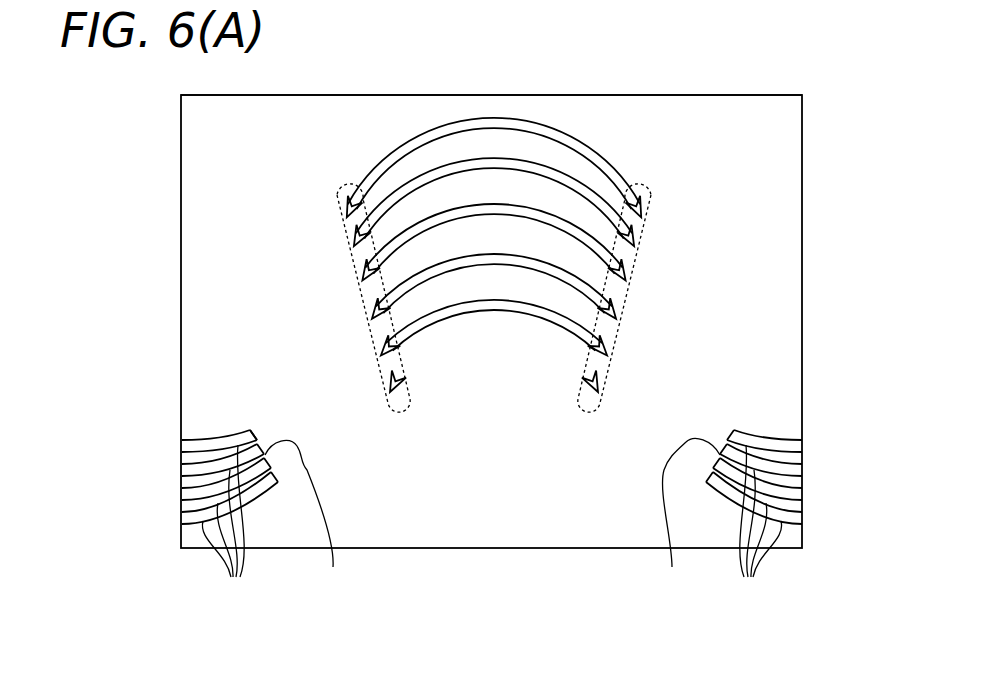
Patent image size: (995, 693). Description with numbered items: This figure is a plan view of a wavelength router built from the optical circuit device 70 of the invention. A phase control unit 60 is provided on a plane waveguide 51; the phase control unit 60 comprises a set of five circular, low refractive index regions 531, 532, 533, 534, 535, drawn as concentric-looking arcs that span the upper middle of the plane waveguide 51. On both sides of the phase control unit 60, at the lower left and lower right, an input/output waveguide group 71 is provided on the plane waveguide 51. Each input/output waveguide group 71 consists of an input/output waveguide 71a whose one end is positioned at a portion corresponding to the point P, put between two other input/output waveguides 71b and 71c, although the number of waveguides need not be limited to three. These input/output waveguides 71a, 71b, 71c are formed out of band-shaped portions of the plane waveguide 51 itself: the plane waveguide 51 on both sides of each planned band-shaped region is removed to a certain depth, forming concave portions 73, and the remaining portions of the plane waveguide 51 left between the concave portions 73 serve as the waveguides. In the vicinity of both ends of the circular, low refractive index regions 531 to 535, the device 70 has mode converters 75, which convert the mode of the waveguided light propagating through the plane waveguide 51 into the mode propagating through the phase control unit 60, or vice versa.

The phase control unit 60 is at (655, 48).
The plane waveguide 51 is at (331, 113).
The circular low refractive index region 535 is at (385, 158).
The circular low refractive index region 534 is at (420, 176).
The circular low refractive index region 533 is at (477, 206).
The circular low refractive index region 532 is at (510, 257).
The circular low refractive index region 531 is at (548, 312).
The optical circuit device 70 is at (740, 93).
The input/output waveguide group 71 is at (490, 488).
The input/output waveguide 71a is at (182, 481).
The input/output waveguide 71b is at (182, 460).
The input/output waveguide 71c is at (488, 502).
The concave portion 73 is at (491, 526).
The mode converter 75 is at (398, 410).
The point P is at (492, 518).